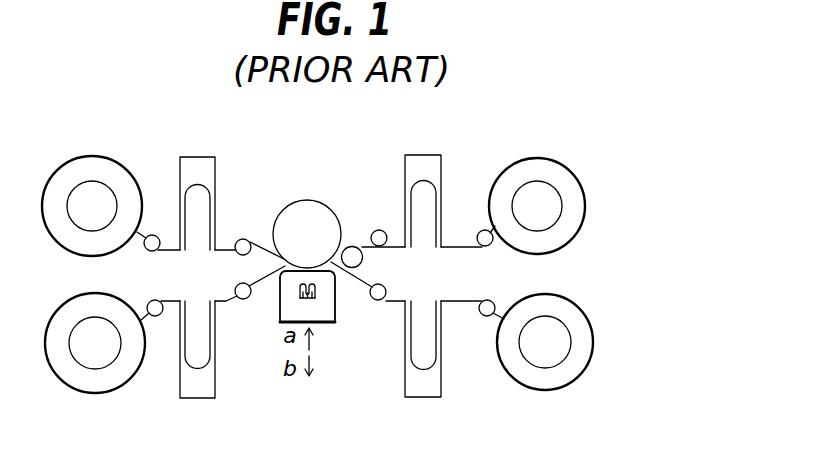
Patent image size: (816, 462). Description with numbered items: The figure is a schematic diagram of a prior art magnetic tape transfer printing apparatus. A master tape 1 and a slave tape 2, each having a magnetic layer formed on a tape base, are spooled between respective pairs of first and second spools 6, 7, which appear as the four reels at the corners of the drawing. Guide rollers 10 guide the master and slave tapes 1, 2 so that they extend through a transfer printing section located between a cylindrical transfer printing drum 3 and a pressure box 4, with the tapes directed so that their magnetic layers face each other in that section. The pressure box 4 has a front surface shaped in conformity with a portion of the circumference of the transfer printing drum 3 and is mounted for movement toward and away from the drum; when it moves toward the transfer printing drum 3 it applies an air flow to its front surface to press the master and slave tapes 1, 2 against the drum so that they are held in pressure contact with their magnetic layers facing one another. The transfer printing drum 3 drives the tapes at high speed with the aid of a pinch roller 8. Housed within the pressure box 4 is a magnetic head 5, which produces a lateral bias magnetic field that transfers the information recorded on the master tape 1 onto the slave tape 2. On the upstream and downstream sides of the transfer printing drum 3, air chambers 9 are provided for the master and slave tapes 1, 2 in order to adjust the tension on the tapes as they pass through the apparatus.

The master tape 1 is at (230, 240).
The slave tape 2 is at (222, 303).
The transfer printing drum 3 is at (311, 204).
The pressure box 4 is at (337, 298).
The magnetic head 5 is at (317, 289).
The first spools 6 is at (124, 168).
The second spools 7 is at (509, 167).
The pinch roller 8 is at (364, 260).
The air chambers 9 is at (214, 156).
The guide rollers 10 is at (147, 253).